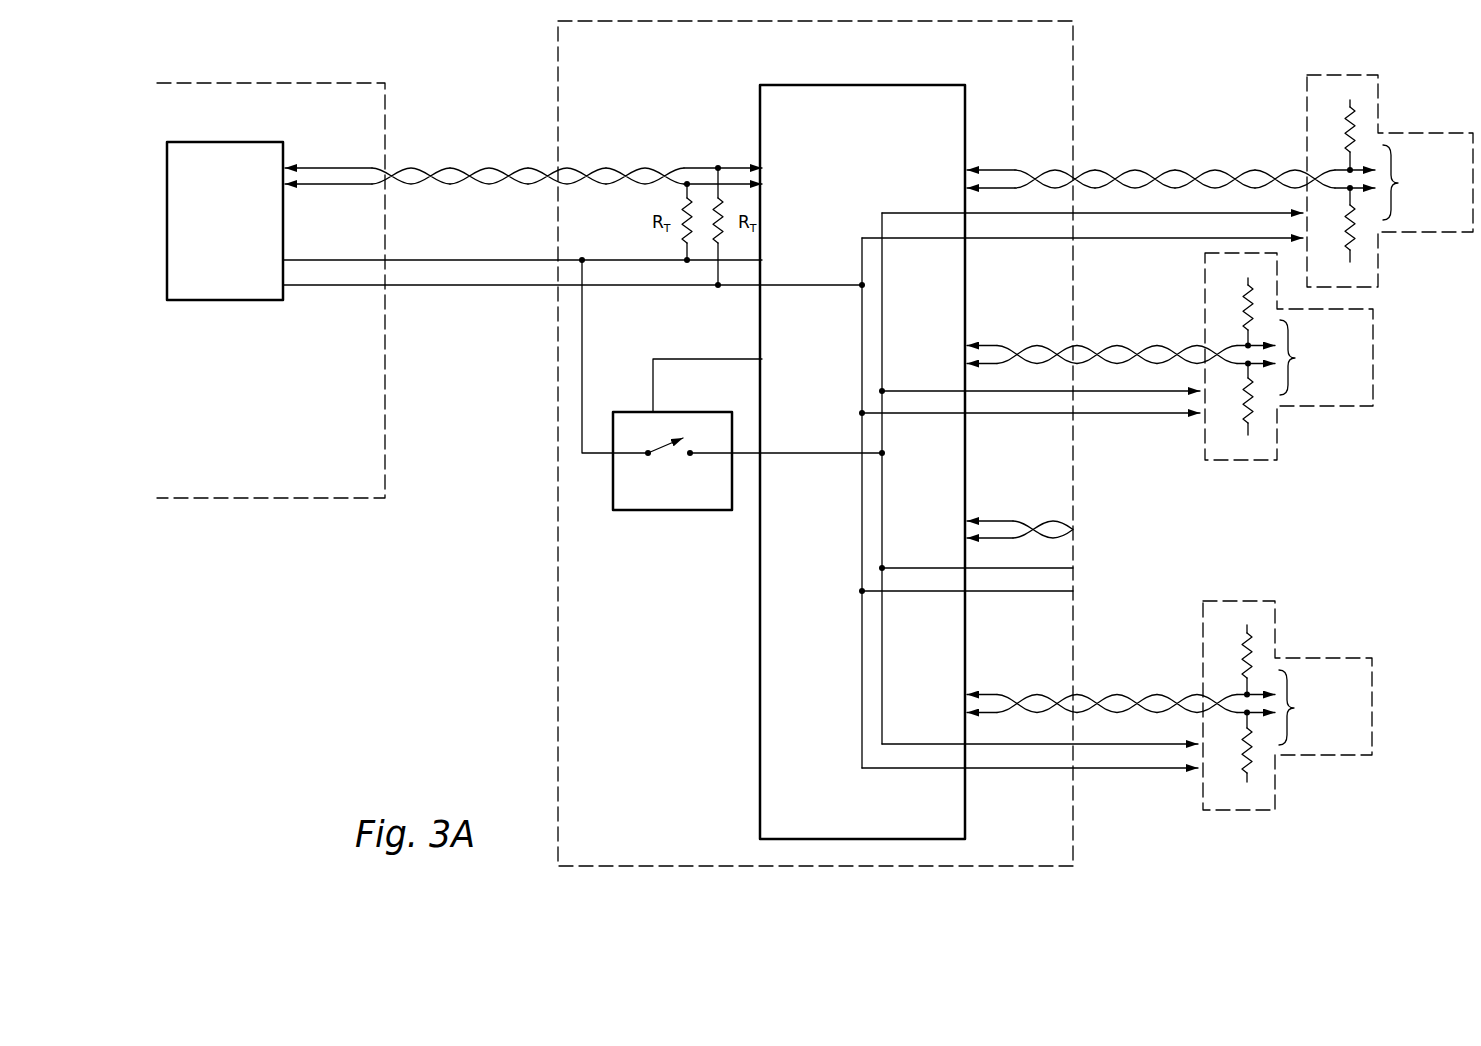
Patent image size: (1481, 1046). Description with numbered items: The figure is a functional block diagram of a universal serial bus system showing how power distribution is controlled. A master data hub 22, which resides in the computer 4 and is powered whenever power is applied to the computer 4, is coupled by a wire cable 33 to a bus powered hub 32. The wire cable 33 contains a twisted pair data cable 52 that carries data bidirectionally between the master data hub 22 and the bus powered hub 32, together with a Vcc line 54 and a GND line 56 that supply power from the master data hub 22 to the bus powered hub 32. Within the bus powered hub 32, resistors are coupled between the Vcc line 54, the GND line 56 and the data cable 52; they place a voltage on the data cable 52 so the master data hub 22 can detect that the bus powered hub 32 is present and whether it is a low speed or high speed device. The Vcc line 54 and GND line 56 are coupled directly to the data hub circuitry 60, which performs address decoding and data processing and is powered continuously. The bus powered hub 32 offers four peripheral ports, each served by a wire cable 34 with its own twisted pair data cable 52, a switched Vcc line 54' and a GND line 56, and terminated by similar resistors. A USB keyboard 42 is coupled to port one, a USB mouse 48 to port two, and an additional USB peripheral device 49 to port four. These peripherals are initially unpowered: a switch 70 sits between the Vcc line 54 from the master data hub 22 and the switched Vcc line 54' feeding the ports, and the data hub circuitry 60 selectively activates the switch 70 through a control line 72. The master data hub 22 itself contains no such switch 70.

The computer 4 is at (317, 498).
The master data hub 22 is at (235, 266).
The bus powered hub 32 is at (1076, 73).
The wire cable 33 is at (585, 128).
The wire cables 34 is at (1164, 160).
The USB keyboard 42 is at (1348, 73).
The USB mouse 48 is at (1375, 385).
The additional USB peripheral device 49 is at (1337, 757).
The data cable 52 is at (460, 167).
The Vcc line 54 is at (522, 295).
The switched Vcc line 54' is at (1092, 503).
The GND line 56 is at (513, 287).
The data hub circuitry 60 is at (815, 677).
The switch 70 is at (647, 440).
The control line 72 is at (652, 367).